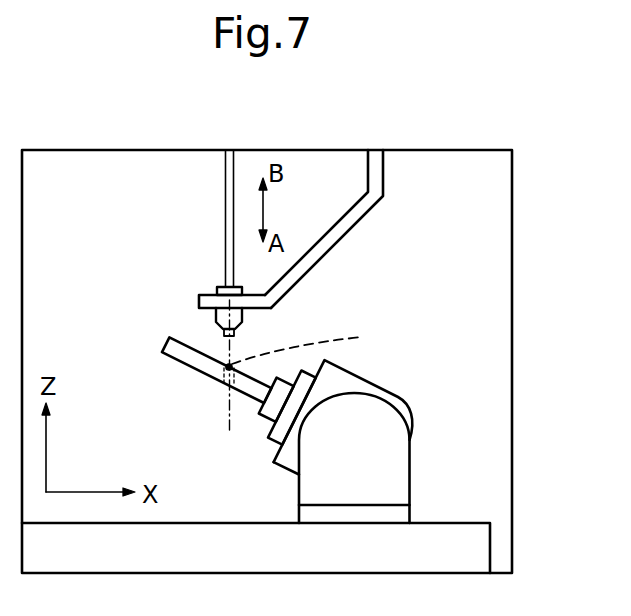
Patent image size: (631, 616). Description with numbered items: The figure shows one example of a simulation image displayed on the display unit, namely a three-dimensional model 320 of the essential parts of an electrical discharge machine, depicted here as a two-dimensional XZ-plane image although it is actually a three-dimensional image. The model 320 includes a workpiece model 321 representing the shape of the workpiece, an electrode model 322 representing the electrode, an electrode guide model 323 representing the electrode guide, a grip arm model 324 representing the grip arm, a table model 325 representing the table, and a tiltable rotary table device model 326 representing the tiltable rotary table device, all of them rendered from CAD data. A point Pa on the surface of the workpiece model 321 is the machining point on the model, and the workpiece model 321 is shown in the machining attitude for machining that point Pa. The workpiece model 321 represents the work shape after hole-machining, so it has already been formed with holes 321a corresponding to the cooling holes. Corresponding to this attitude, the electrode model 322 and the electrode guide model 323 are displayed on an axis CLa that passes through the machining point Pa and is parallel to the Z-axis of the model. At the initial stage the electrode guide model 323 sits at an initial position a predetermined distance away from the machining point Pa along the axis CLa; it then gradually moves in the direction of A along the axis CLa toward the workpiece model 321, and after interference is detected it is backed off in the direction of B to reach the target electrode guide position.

The 3D model 320 is at (474, 276).
The workpiece model 321 is at (177, 358).
The holes 321a is at (328, 343).
The electrode model 322 is at (228, 212).
The electrode guide model 323 is at (244, 313).
The grip arm model 324 is at (340, 232).
The table model 325 is at (460, 522).
The tiltable rotary table device model 326 is at (419, 390).
The machining point Pa is at (227, 364).
The axis CLa is at (230, 385).